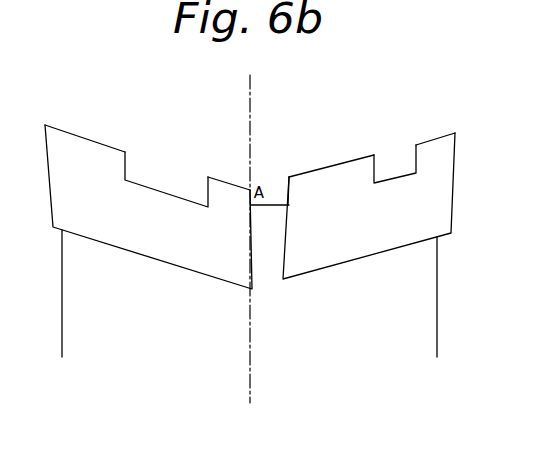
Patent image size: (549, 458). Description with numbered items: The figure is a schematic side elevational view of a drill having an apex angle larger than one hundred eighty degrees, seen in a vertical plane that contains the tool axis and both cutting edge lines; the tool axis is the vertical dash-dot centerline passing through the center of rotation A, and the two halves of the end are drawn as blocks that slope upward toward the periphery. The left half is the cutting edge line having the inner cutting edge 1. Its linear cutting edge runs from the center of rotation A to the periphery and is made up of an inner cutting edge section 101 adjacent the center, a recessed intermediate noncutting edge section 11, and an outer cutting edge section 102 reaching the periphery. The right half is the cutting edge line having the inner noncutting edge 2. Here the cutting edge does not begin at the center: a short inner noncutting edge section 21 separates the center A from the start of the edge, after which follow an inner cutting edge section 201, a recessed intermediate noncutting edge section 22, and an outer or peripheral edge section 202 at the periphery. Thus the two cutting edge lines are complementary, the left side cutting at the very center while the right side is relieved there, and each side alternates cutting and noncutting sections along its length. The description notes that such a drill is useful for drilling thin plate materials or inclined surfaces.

The cutting edge line having the inner cutting edge 1 is at (181, 249).
The cutting edge line having the inner noncutting edge 2 is at (365, 233).
The intermediate noncutting edge section 11 is at (173, 170).
The inner cutting edge section 101 is at (227, 177).
The outer cutting edge section 102 is at (84, 135).
The inner noncutting edge section 21 is at (280, 195).
The intermediate noncutting edge section 22 is at (393, 152).
The inner cutting edge section 201 is at (328, 165).
The outer or peripheral edge section 202 is at (440, 133).